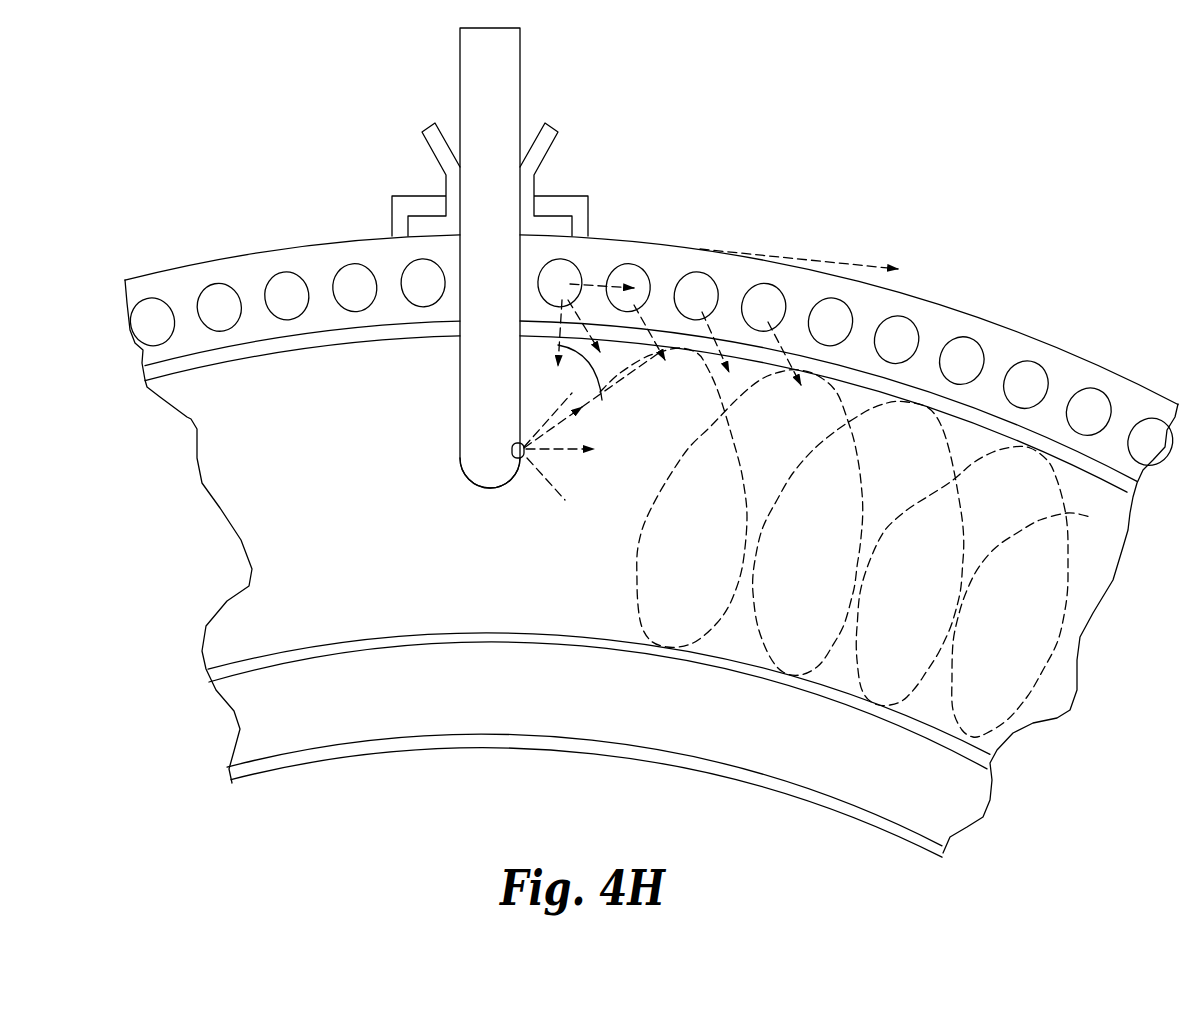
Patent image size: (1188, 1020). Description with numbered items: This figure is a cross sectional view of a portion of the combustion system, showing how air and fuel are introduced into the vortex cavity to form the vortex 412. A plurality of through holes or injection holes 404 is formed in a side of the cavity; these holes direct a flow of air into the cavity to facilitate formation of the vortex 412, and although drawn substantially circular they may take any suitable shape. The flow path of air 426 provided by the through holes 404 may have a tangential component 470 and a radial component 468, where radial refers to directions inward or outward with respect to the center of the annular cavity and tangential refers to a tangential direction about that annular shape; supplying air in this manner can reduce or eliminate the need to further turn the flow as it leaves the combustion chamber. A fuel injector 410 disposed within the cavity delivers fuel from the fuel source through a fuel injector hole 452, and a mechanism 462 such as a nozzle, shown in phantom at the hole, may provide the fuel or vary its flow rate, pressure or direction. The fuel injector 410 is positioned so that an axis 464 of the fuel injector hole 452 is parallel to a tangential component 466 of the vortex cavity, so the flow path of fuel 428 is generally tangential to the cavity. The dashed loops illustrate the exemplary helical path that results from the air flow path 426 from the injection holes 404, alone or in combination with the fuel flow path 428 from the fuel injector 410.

The through holes (injection holes) 404 is at (958, 336).
The fuel injector 410 is at (520, 79).
The vortex 412 is at (1068, 597).
The flow path of air 426 is at (642, 320).
The flow path of fuel 428 is at (568, 494).
The fuel injector hole 452 is at (510, 445).
The mechanism (nozzle) 462 is at (530, 462).
The axis of the fuel injector hole 464 is at (557, 452).
The tangential component of the vortex cavity 466 is at (832, 262).
The radial component 468 is at (593, 399).
The tangential component 470 is at (608, 285).